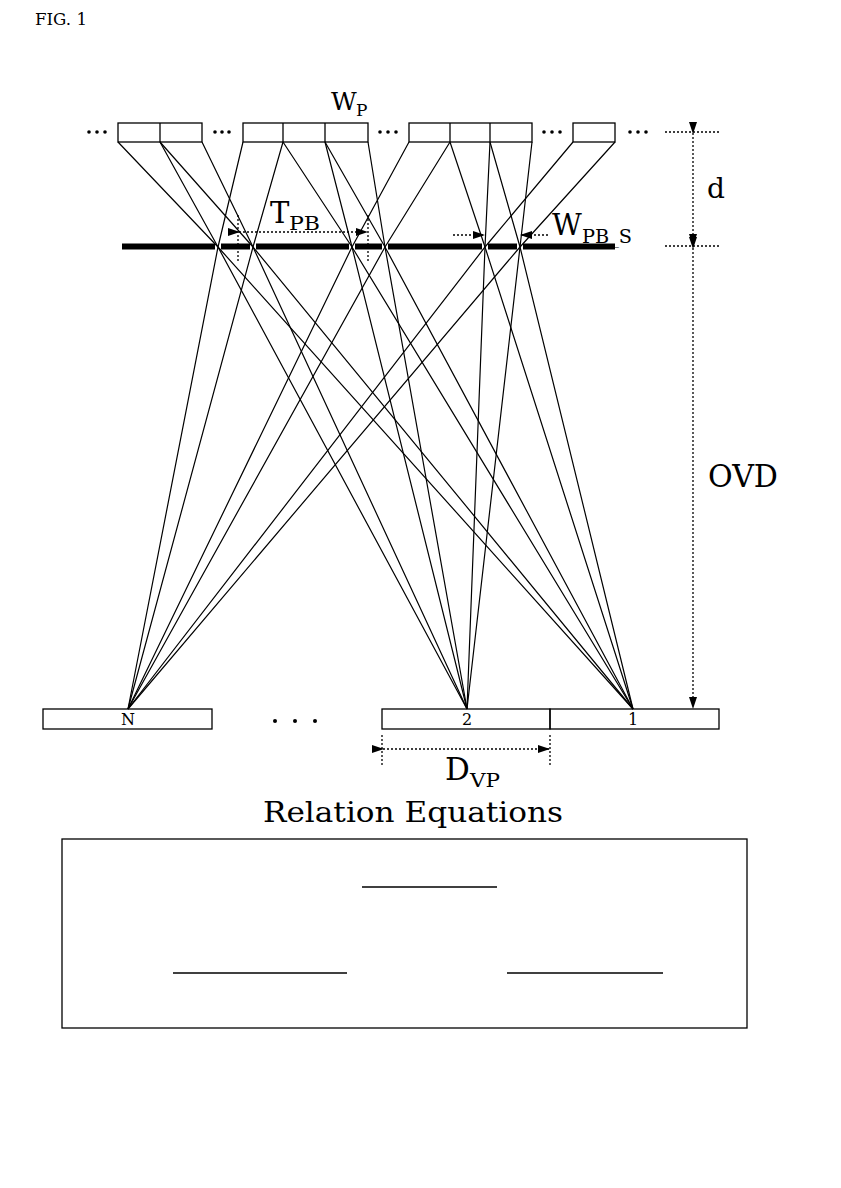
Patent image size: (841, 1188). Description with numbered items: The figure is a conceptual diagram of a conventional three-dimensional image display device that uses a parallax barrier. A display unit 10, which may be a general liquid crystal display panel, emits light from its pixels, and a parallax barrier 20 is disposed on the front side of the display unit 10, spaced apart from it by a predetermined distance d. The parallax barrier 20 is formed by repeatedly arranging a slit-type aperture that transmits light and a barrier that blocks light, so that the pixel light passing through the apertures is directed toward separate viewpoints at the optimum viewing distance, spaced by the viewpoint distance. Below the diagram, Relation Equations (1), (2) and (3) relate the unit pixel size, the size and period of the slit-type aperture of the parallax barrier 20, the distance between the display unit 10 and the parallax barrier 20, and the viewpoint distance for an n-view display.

The display unit 10 is at (471, 122).
The parallax barrier 20 is at (569, 252).
The relation equation (1) for slit width W_PB_S 1 is at (407, 887).
The relation equation (2) for barrier pitch T_PB 2 is at (259, 973).
The relation equation (3) for barrier distance d 3 is at (596, 973).